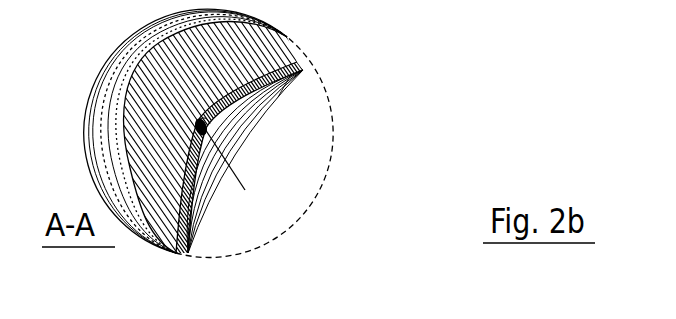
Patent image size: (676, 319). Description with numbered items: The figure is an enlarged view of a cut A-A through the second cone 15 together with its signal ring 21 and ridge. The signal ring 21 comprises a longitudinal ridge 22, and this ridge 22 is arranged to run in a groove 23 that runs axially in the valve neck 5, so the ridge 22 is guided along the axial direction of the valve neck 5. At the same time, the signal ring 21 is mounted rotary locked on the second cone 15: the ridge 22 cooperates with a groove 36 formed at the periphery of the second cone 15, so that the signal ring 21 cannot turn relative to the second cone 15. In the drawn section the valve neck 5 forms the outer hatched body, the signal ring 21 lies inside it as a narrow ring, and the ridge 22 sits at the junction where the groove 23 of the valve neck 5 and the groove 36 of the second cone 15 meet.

The valve neck 5 is at (278, 48).
The second cone 15 is at (193, 183).
The signal ring 21 is at (293, 66).
The longitudinal ridge 22 is at (207, 128).
The groove 23 is at (202, 126).
The groove 36 is at (245, 190).